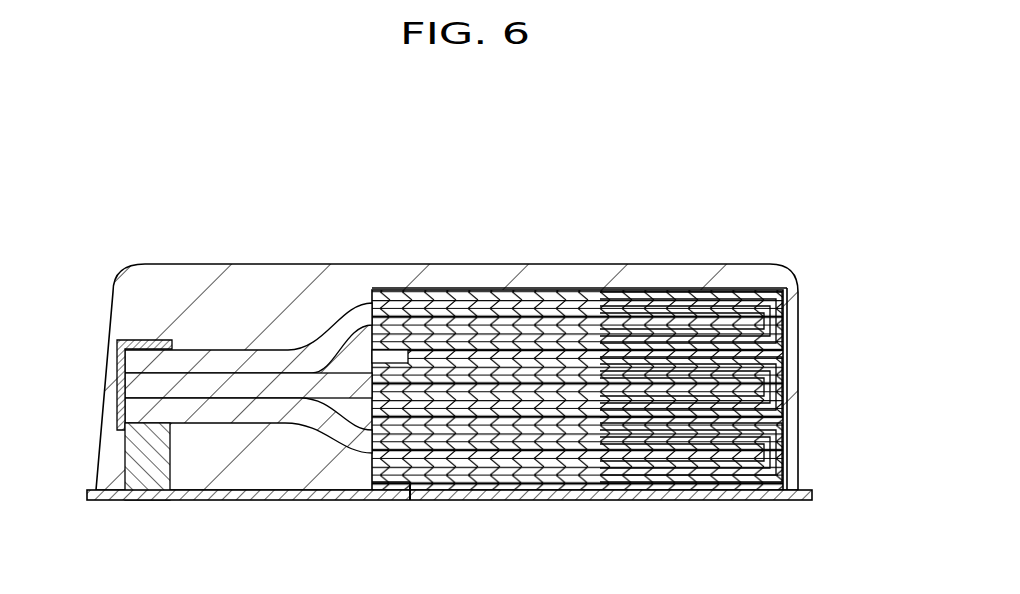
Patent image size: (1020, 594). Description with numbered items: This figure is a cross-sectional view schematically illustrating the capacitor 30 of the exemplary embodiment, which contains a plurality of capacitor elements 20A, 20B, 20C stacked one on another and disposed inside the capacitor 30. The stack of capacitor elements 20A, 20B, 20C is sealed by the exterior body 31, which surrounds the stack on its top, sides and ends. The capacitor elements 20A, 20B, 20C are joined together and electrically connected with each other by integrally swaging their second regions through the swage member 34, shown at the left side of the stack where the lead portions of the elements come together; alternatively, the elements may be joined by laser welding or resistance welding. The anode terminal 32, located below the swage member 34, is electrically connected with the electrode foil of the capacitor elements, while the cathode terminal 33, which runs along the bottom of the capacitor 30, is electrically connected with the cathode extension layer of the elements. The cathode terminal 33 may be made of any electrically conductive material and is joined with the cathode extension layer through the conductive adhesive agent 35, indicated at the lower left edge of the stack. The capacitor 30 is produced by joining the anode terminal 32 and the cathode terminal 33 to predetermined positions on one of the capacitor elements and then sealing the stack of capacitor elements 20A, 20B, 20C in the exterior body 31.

The capacitor 30 is at (511, 243).
The exterior body 31 is at (213, 287).
The anode terminal 32 is at (149, 480).
The cathode terminal 33 is at (472, 496).
The swage member 34 is at (118, 383).
The conductive adhesive agent 35 is at (410, 502).
The capacitor element 20A is at (804, 289).
The capacitor element 20B is at (804, 354).
The capacitor element 20C is at (804, 421).